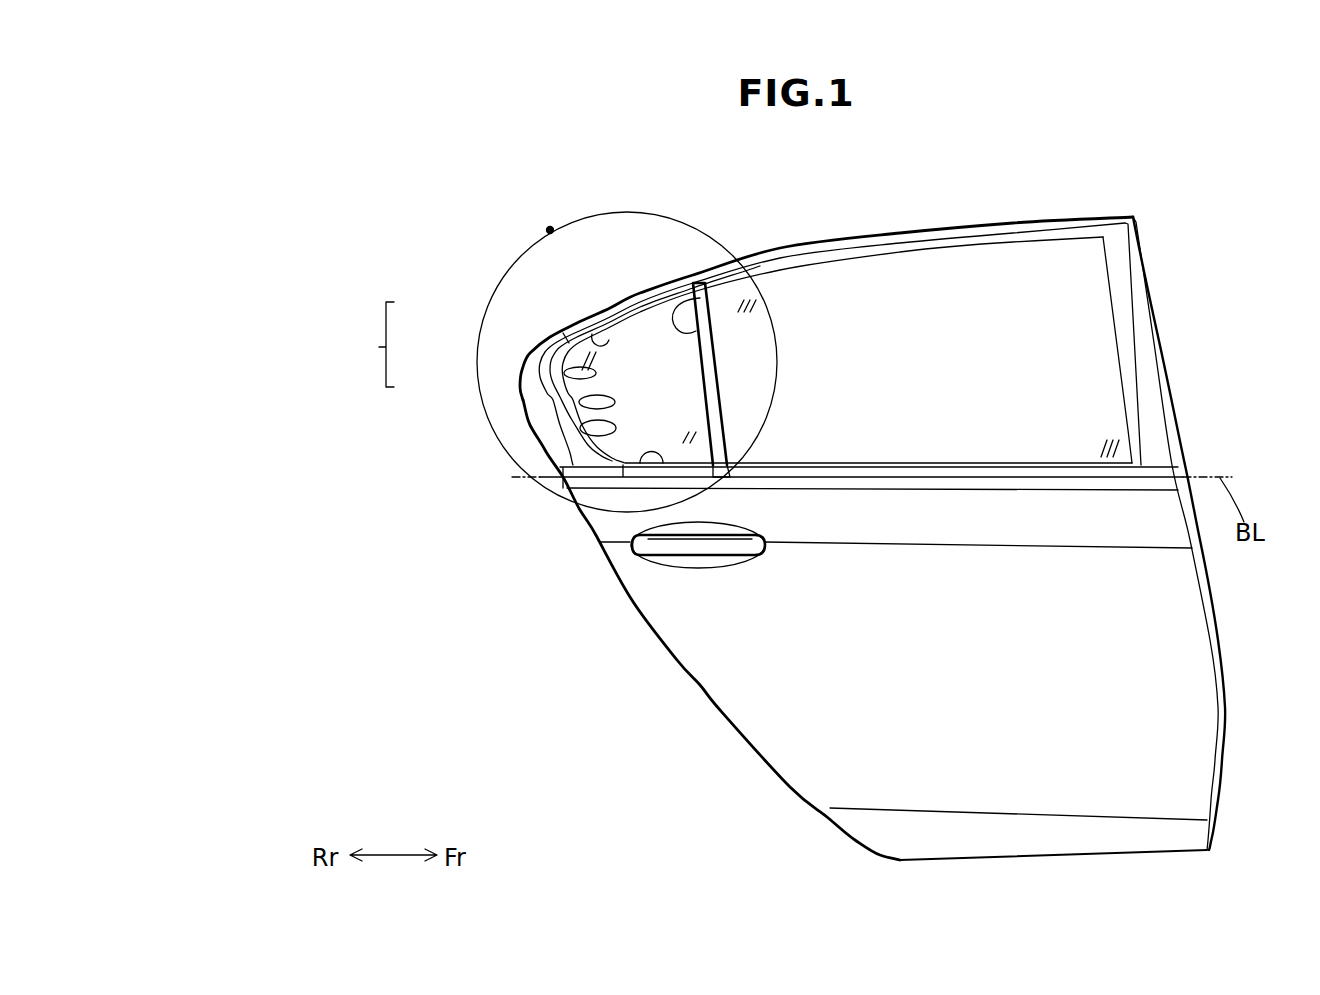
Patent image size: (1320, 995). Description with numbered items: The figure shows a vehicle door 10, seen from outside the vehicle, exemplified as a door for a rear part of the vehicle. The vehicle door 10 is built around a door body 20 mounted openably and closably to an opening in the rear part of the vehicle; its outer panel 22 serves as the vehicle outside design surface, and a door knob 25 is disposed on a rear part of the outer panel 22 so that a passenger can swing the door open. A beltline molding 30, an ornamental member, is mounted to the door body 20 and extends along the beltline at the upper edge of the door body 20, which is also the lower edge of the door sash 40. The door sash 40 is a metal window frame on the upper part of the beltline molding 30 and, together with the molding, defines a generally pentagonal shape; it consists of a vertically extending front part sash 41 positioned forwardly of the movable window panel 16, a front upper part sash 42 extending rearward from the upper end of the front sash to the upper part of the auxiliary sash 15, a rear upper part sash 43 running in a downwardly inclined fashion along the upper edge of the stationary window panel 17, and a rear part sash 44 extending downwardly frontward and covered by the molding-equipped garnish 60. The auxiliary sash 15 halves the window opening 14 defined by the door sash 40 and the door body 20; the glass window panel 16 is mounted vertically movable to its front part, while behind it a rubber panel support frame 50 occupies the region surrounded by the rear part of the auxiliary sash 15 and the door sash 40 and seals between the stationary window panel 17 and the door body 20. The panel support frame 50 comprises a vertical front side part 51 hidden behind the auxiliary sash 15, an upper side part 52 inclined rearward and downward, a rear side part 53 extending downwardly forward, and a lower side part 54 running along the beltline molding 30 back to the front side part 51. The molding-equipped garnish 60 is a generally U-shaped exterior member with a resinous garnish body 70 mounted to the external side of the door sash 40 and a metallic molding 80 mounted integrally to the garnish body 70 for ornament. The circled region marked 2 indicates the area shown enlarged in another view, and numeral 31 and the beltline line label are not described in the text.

The section line II (enlarged view region) 2 is at (550, 230).
The vehicle door 10 is at (352, 233).
The window opening 14 is at (915, 376).
The auxiliary sash 15 is at (712, 303).
The window panel 16 is at (1067, 277).
The stationary window panel 17 is at (663, 333).
The door body 20 is at (697, 680).
The outer panel 22 is at (822, 739).
The door knob 25 is at (690, 556).
The beltline molding 30 is at (1043, 462).
The belt line molding 31 is at (1157, 470).
The door sash 40 is at (963, 223).
The front part sash 41 is at (1155, 310).
The front upper part sash 42 is at (908, 228).
The rear upper part sash 43 is at (627, 293).
The rear part sash 44 is at (537, 428).
The panel support frame 50 is at (588, 412).
The front side part 51 is at (675, 303).
The upper side part 52 is at (582, 325).
The rear side part 53 is at (572, 452).
The lower side part 54 is at (648, 463).
The molding-equipped garnish 60 is at (368, 344).
The garnish body 70 is at (570, 373).
The molding 80 is at (517, 390).